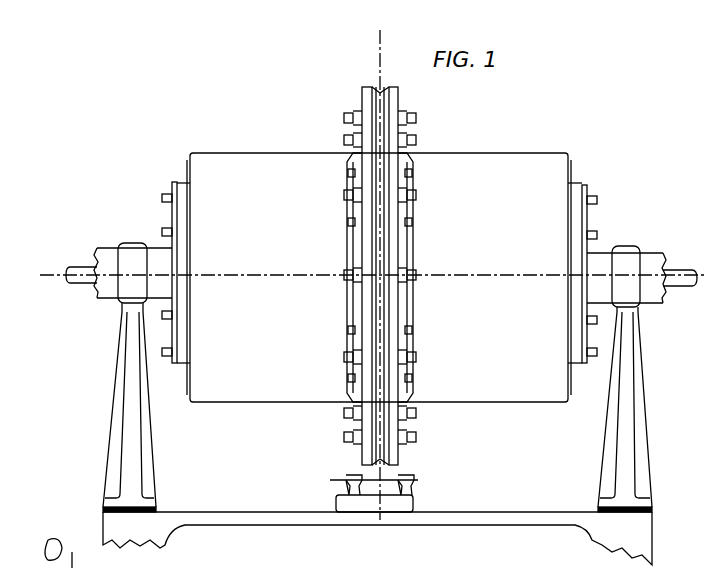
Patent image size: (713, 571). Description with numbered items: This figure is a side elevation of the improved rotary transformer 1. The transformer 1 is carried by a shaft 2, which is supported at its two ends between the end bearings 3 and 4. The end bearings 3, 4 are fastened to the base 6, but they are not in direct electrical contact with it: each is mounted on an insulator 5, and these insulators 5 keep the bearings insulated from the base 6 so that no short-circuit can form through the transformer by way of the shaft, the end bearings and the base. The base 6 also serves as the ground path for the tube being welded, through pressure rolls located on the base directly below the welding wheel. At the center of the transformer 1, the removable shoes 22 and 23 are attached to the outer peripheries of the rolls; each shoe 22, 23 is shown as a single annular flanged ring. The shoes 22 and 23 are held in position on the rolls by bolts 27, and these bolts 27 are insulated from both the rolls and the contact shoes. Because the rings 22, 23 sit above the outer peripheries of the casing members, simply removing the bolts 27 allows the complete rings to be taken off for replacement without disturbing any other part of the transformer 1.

The rotary transformer 1 is at (233, 151).
The shaft 2 is at (95, 249).
The end bearing 3 is at (124, 315).
The end bearing 4 is at (640, 322).
The insulator 5 is at (160, 508).
The base 6 is at (232, 528).
The removable shoe 22 is at (361, 91).
The removable shoe 23 is at (401, 96).
The bolt 27 is at (418, 119).